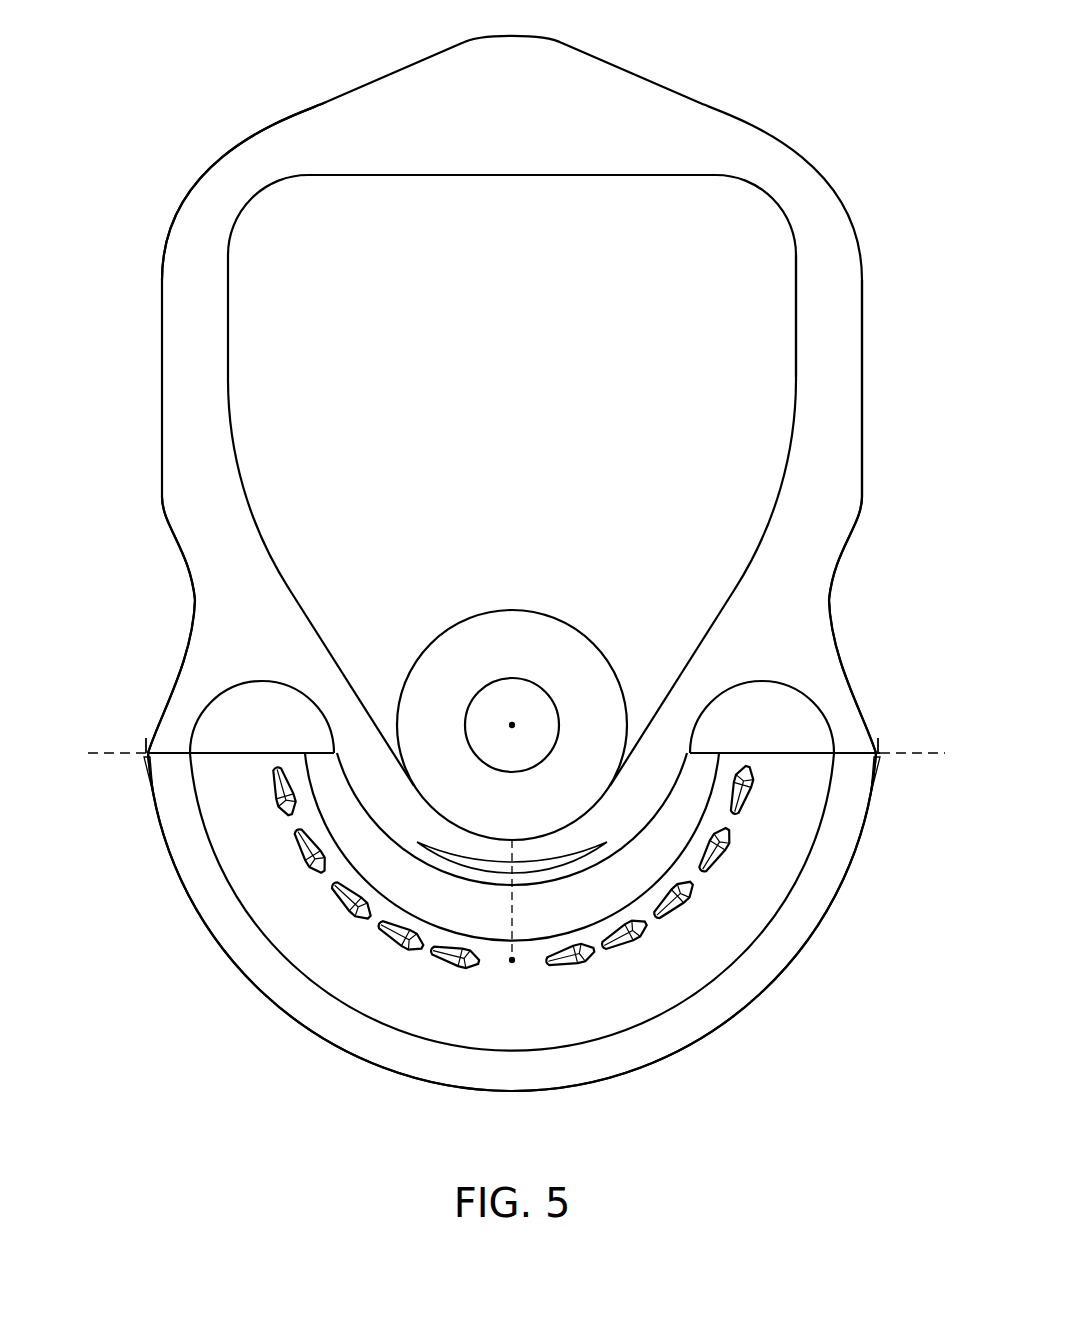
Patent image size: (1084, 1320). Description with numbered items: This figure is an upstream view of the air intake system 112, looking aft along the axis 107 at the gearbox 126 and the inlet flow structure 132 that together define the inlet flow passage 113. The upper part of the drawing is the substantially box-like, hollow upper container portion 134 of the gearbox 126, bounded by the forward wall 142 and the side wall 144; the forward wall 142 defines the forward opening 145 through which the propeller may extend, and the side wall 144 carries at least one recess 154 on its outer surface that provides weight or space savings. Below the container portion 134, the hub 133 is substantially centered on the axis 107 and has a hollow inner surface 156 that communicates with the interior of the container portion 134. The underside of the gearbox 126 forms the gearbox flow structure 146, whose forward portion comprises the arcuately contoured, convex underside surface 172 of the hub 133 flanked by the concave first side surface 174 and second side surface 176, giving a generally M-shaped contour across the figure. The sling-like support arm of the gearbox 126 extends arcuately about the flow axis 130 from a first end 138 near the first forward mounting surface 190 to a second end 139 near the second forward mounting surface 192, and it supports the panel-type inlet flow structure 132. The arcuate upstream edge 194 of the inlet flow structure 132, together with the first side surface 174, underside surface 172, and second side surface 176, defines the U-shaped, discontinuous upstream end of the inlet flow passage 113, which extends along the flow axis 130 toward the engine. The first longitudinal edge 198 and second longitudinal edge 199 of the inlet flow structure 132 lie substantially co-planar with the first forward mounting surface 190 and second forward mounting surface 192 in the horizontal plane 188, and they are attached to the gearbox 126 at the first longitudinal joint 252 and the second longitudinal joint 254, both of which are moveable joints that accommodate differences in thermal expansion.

The gearbox 126 is at (512, 554).
The upper container portion 134 is at (214, 191).
The forward wall 142 is at (222, 365).
The side wall 144 is at (864, 325).
The forward opening 145 is at (797, 292).
The recess 154 is at (187, 600).
The second end 139 is at (190, 652).
The first end 138 is at (843, 666).
The second side surface 176 is at (252, 690).
The first side surface 174 is at (773, 692).
The axis 107 is at (512, 724).
The hollow inner surface 156 is at (536, 766).
The hub 133 is at (542, 834).
The underside surface 172 is at (485, 862).
The flow axis 130 is at (512, 962).
The upstream edge 194 is at (612, 1018).
The inlet flow structure 132 is at (512, 964).
The air intake system 112 is at (428, 847).
The inlet flow passage 113 is at (512, 869).
The gearbox flow structure 146 is at (309, 846).
The second longitudinal joint 254 is at (188, 726).
The first longitudinal joint 252 is at (825, 714).
The second longitudinal edge 199 is at (150, 745).
The first longitudinal edge 198 is at (878, 738).
The second forward mounting surface 192 is at (151, 758).
The horizontal plane 188 is at (900, 757).
The first forward mounting surface 190 is at (853, 755).